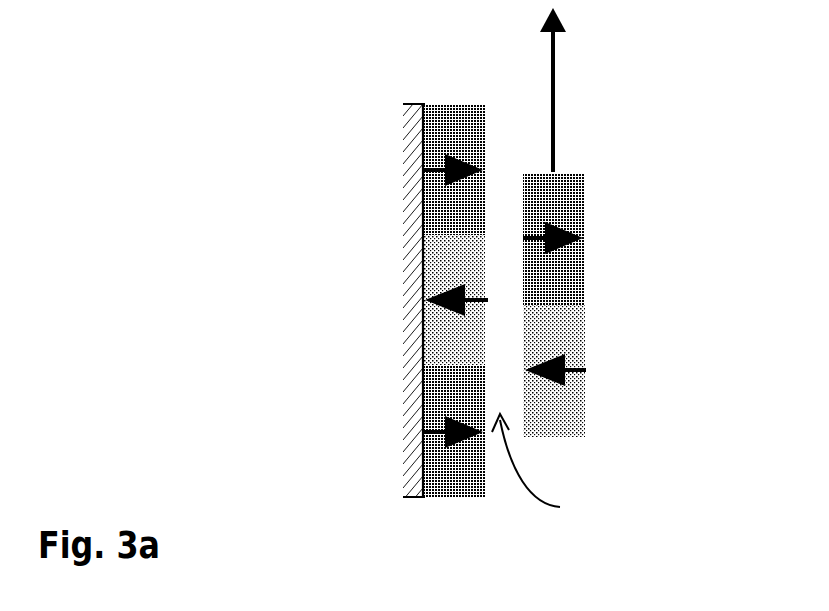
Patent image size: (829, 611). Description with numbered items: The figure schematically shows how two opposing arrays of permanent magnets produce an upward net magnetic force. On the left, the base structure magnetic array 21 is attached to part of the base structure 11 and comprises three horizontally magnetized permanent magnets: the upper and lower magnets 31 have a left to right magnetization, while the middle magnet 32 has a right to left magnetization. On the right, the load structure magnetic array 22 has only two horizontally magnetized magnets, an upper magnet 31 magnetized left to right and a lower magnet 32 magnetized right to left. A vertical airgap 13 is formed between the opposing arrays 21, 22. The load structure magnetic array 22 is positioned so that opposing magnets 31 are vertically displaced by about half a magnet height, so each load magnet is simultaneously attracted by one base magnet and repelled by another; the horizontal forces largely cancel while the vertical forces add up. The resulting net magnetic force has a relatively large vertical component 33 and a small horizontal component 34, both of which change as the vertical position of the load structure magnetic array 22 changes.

The base structure 11 is at (402, 192).
The vertical airgap 13 is at (559, 473).
The base structure magnetic array 21 is at (424, 58).
The load structure magnetic array 22 is at (663, 305).
The permanent magnet with left to right magnetization 31 is at (425, 474).
The permanent magnet with right to left magnetization 32 is at (430, 340).
The vertical component of the net magnetic force 33 is at (548, 95).
The horizontal component of the net magnetic force 34 is at (574, 171).